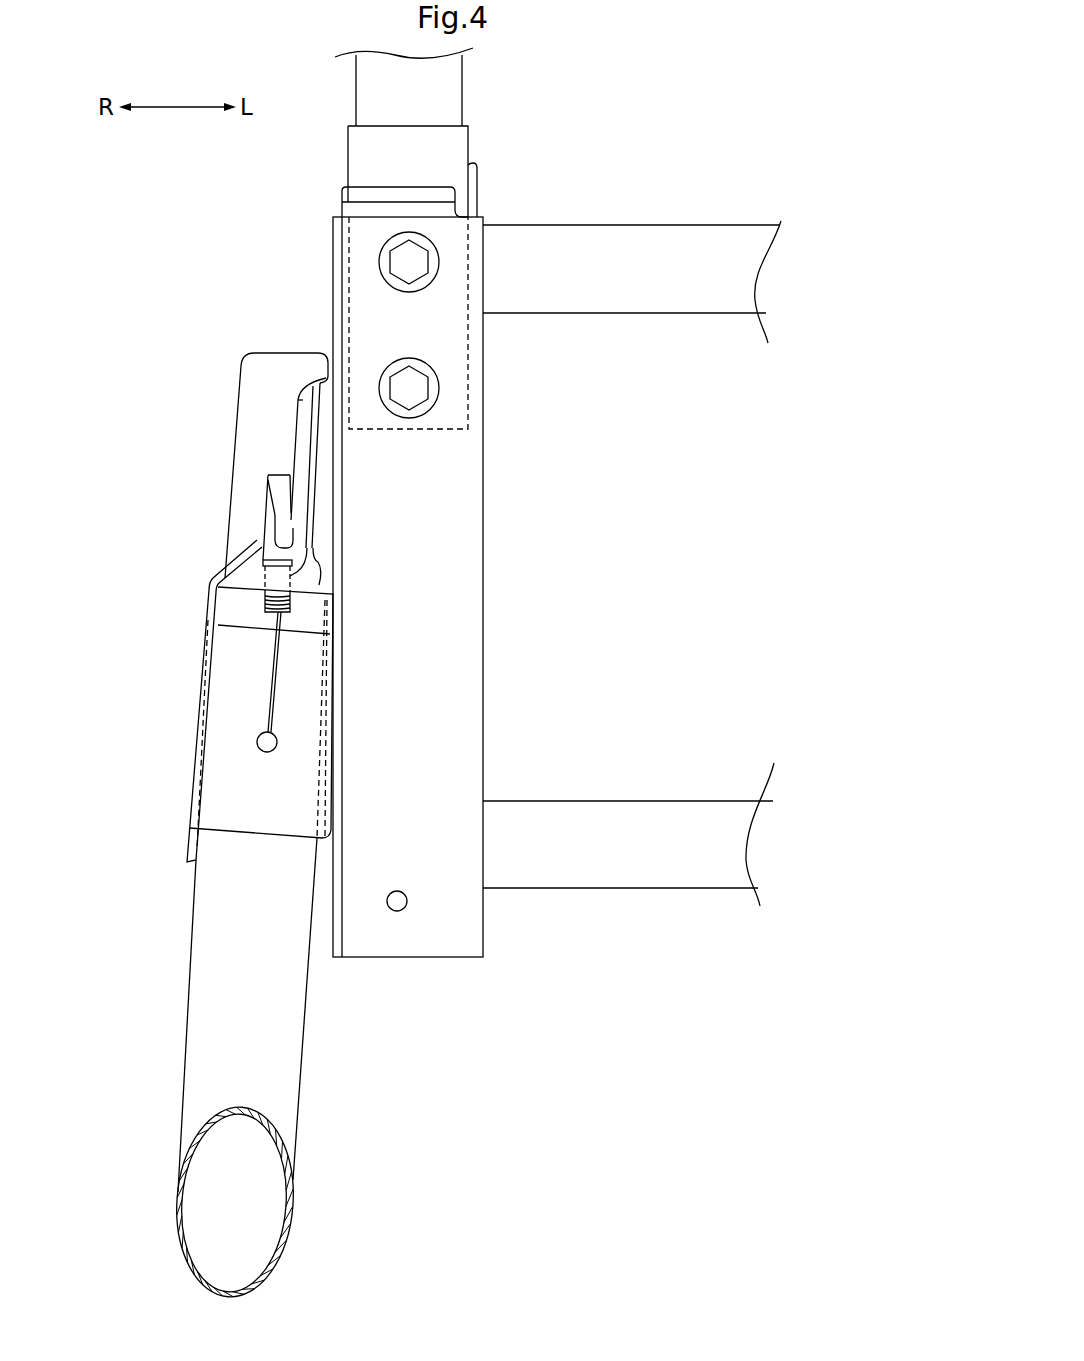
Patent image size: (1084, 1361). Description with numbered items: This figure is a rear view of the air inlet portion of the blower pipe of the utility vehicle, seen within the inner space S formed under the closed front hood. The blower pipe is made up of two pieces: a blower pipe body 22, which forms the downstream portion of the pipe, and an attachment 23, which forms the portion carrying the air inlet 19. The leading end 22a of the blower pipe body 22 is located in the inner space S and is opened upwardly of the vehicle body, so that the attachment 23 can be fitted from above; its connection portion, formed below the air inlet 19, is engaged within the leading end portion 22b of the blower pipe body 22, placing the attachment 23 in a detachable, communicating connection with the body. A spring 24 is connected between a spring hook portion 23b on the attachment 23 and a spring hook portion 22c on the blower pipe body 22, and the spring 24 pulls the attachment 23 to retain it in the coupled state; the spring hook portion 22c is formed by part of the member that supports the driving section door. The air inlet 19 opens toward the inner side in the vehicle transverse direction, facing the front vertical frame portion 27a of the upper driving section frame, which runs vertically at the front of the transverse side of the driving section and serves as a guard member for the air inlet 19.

The front vertical frame portion 27a is at (333, 270).
The inner space S is at (253, 333).
The attachment device 23 is at (242, 418).
The air inlet 19 is at (318, 475).
The spring hook portion 23b is at (273, 503).
The spring 24 is at (270, 608).
The leading end 22a is at (325, 582).
The leading end portion 22b is at (318, 622).
The spring hook portion 22c is at (233, 735).
The blower pipe body 22 is at (285, 1030).